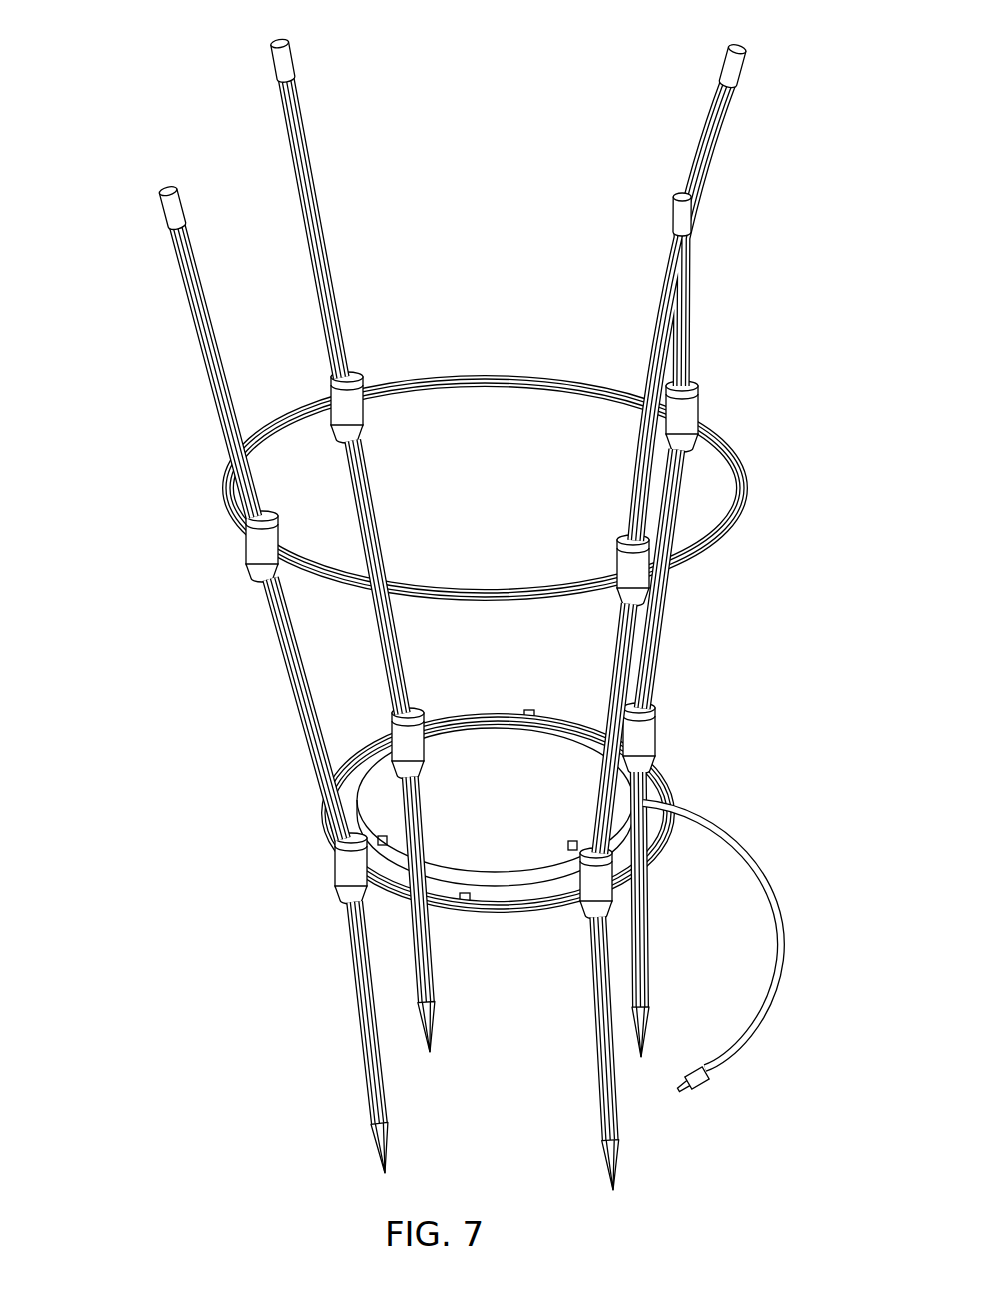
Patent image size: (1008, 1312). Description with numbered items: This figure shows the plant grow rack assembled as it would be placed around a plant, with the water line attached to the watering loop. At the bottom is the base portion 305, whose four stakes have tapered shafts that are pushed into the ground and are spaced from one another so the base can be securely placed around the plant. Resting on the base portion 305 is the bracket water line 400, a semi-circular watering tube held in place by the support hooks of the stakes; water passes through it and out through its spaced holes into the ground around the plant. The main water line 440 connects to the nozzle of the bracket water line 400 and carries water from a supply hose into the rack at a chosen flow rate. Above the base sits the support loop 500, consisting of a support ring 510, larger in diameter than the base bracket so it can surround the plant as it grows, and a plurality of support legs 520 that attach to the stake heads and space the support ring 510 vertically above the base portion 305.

The base portion 305 is at (399, 886).
The bracket water line 400 is at (491, 881).
The main water line 440 is at (790, 911).
The support loop 500 is at (550, 489).
The support ring 510 is at (736, 478).
The support legs 520 is at (282, 98).